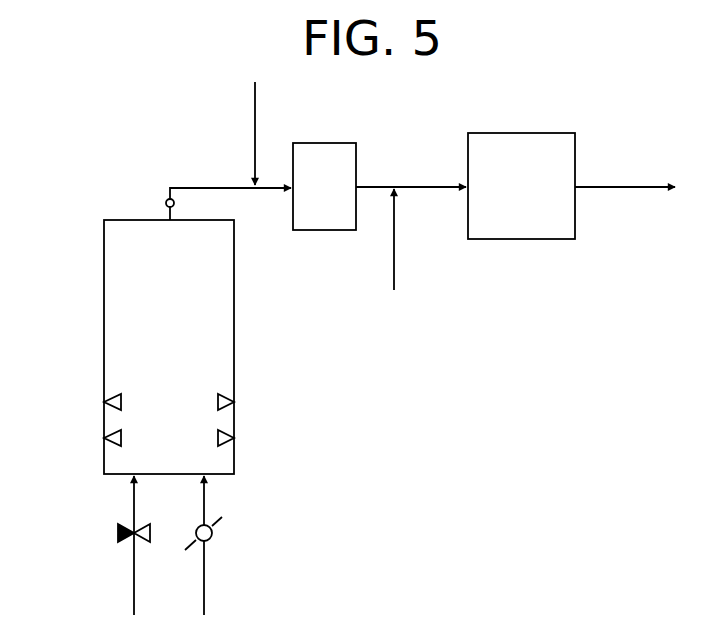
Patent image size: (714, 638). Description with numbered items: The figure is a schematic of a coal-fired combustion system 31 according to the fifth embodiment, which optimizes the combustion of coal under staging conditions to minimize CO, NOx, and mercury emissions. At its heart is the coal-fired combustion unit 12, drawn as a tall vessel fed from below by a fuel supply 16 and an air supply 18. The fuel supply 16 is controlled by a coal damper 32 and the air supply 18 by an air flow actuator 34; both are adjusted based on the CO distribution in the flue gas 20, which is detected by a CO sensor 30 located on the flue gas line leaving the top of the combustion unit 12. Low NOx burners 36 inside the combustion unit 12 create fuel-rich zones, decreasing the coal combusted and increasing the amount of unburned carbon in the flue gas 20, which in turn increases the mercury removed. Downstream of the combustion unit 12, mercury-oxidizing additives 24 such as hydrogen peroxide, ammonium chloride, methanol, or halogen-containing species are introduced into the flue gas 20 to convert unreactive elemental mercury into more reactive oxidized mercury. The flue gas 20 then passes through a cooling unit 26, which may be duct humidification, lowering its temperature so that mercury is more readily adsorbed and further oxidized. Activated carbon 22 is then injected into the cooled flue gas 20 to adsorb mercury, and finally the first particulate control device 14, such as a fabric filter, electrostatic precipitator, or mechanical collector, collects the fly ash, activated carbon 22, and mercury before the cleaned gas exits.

The coal-fired combustion system 31 is at (88, 108).
The coal-fired combustion unit 12 is at (104, 278).
The flue gas 20 is at (181, 187).
The CO sensors 30 is at (165, 203).
The mercury-oxidizing additives 24 is at (254, 118).
The cooling unit 26 is at (312, 143).
The activated carbon 22 is at (395, 258).
The first particulate control device 14 is at (518, 133).
The Low NOx burners 36 is at (218, 402).
The fuel supply 16 is at (134, 578).
The air supply 18 is at (204, 594).
The coal dampers 32 is at (118, 531).
The air flow actuators 34 is at (212, 538).